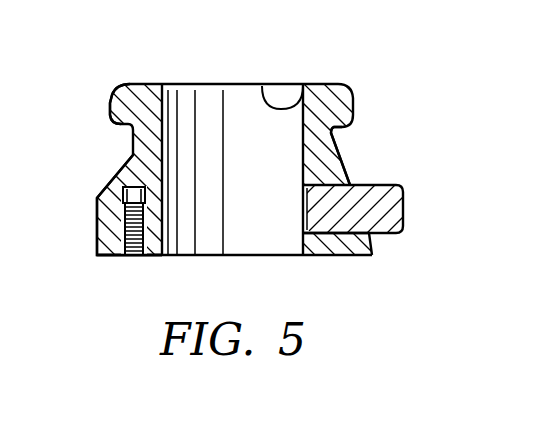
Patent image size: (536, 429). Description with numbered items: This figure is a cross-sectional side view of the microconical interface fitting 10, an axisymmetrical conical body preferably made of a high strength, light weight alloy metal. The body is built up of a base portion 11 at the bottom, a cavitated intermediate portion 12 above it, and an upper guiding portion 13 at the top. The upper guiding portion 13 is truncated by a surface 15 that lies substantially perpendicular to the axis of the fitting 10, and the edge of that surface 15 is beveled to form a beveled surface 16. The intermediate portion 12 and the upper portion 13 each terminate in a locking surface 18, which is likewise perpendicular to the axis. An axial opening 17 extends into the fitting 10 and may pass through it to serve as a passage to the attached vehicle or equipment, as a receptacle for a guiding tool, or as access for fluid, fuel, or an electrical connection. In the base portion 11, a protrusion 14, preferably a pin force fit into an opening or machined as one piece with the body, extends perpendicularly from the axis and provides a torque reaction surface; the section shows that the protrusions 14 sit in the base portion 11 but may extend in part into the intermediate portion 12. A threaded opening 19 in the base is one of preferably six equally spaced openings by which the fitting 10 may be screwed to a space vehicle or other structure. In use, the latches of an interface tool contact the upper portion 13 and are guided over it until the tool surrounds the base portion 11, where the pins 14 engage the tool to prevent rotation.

The microconical interface fitting 10 is at (340, 53).
The base portion 11 is at (102, 227).
The cavitated intermediate portion 12 is at (137, 137).
The upper guiding portion 13 is at (127, 100).
The protrusions 14 is at (390, 235).
The surface 15 is at (153, 84).
The beveled surface 16 is at (346, 92).
The axial opening 17 is at (263, 84).
The locking surface 18 is at (348, 130).
The threaded openings 19 is at (108, 196).